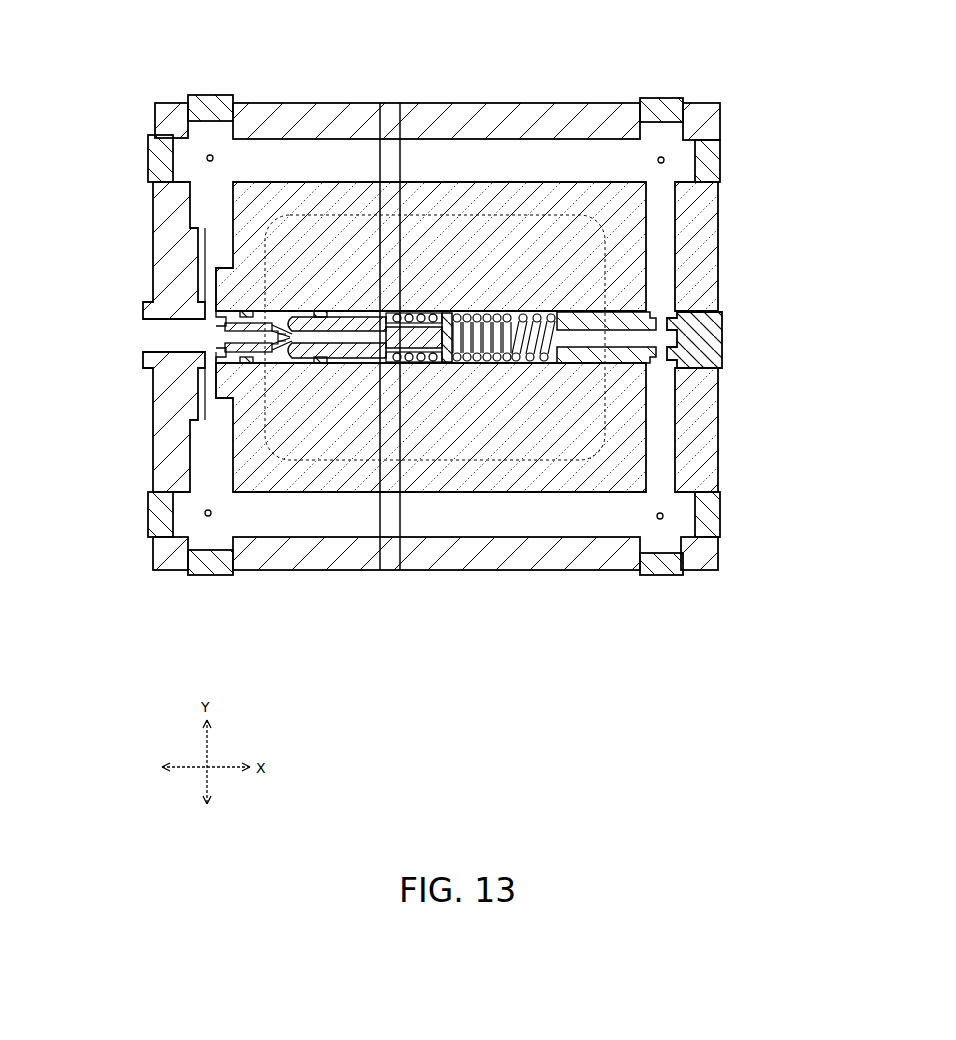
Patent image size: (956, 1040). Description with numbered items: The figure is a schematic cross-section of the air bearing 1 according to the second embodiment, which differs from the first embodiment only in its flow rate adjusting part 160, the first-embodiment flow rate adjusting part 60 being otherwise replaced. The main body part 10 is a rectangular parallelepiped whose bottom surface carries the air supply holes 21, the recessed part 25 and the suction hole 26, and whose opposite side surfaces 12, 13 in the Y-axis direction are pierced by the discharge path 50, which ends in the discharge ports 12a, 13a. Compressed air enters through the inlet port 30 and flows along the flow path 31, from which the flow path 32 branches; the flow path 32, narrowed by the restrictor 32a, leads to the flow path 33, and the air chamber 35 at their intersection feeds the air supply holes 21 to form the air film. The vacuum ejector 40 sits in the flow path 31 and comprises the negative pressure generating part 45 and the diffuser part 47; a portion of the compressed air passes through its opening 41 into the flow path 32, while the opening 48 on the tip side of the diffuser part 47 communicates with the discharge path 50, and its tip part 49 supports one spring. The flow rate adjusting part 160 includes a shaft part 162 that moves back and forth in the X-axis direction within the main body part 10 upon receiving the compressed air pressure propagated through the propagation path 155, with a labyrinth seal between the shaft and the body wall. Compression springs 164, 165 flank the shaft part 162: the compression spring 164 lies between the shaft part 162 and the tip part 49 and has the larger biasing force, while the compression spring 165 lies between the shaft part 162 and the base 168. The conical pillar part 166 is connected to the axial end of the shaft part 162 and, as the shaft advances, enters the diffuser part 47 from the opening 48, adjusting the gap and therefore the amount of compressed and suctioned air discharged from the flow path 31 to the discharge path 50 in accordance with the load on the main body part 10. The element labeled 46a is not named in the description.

The air bearing 1 is at (493, 42).
The main body part 10 is at (575, 103).
The side surface 12 is at (310, 103).
The discharge port 12a is at (386, 103).
The side surface 13 is at (322, 570).
The discharge port 13a is at (396, 570).
The air supply hole 21 is at (210, 155).
The recessed part 25 is at (515, 182).
The suction hole 26 is at (284, 363).
The inlet port 30 is at (138, 330).
The flow path 31 is at (160, 300).
The flow path 32 is at (178, 222).
The restrictor 32a is at (210, 285).
The flow path 33 is at (468, 135).
The air chamber 35 is at (175, 168).
The vacuum ejector 40 is at (232, 312).
The opening 41 is at (215, 325).
The negative pressure generating part 45 is at (298, 312).
The nozzle orifice 46a is at (284, 331).
The diffuser part 47 is at (340, 320).
The opening 48 is at (368, 318).
The tip part 49 is at (410, 363).
The discharge path 50 is at (430, 125).
The flow rate adjusting part 60 is at (205, 575).
The propagation path 155 is at (592, 363).
The flow rate adjusting part 160 is at (375, 363).
The shaft part 162 is at (464, 314).
The compression spring 164 is at (428, 313).
The compression spring 165 is at (528, 314).
The pillar part 166 is at (447, 363).
The base 168 is at (570, 314).